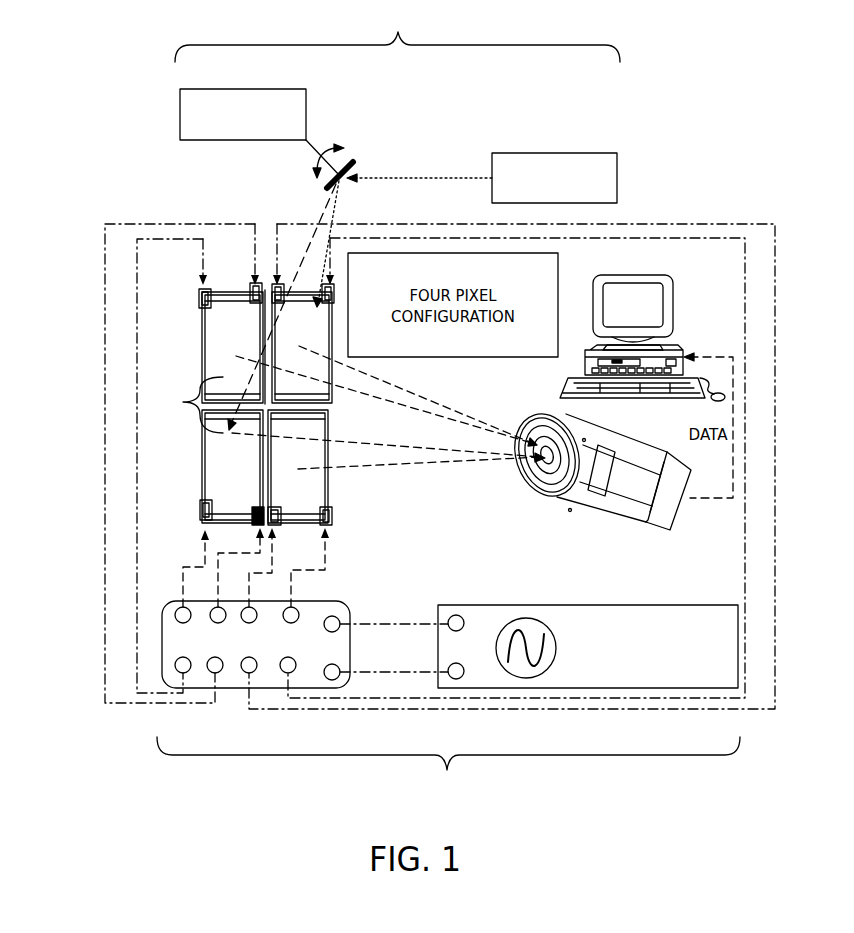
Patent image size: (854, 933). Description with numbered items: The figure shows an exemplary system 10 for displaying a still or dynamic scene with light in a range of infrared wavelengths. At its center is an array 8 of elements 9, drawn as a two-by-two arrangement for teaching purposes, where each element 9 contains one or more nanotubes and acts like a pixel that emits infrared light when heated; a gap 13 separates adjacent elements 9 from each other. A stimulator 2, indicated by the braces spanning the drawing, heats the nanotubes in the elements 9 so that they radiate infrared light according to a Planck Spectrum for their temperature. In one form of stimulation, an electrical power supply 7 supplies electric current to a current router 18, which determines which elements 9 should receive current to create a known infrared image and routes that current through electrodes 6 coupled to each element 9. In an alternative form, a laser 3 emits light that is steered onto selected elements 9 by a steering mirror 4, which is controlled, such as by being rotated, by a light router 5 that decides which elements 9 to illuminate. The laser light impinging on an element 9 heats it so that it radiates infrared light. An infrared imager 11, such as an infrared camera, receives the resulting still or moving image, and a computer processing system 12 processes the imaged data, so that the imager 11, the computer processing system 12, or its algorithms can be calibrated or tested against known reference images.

The system 10 is at (74, 46).
The stimulator 2 is at (448, 410).
The light router 5 is at (180, 117).
The steering mirror 4 is at (349, 166).
The laser 3 is at (617, 180).
The gap 13 is at (256, 275).
The array 8 is at (183, 336).
The element 9 is at (196, 405).
The electrode 6 is at (333, 516).
The computer processing system 12 is at (675, 302).
The infrared imager 11 is at (612, 522).
The current router 18 is at (340, 603).
The electrical power supply 7 is at (703, 605).